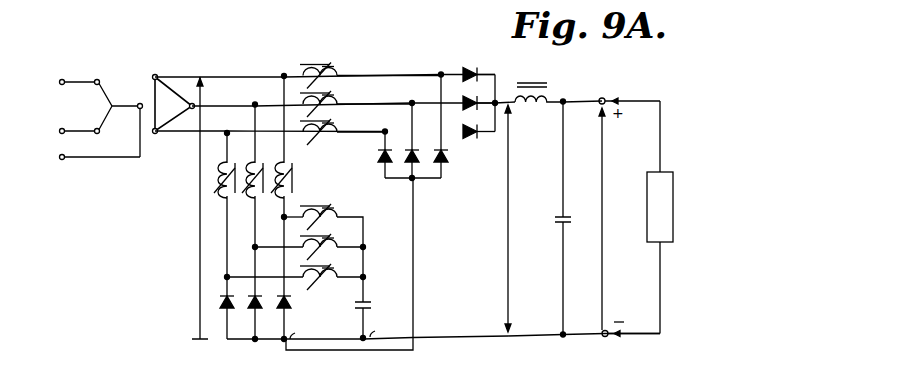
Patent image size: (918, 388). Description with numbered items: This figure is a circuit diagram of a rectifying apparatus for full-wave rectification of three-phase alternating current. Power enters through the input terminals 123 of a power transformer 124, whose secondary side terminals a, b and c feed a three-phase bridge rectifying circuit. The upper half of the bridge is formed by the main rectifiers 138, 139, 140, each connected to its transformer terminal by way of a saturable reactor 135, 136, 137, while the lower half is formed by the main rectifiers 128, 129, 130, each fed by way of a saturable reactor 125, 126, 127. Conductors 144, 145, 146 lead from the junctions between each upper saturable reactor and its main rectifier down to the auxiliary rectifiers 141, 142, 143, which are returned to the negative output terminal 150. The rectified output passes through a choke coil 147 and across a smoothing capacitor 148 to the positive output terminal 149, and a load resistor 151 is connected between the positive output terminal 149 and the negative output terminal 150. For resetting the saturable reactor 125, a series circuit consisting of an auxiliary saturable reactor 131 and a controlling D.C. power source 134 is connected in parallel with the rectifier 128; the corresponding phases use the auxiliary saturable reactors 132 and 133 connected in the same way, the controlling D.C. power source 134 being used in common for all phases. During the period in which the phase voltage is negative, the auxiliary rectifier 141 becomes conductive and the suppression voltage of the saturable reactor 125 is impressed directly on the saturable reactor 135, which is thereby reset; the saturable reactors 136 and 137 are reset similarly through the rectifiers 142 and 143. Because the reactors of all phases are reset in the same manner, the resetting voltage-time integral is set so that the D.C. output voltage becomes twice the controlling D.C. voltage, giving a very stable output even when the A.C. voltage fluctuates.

The input terminals 123 is at (79, 120).
The power transformer 124 is at (135, 88).
The saturable reactor 125 is at (290, 180).
The saturable reactor 126 is at (262, 168).
The saturable reactor 127 is at (231, 156).
The main rectifier 128 is at (291, 303).
The main rectifier 129 is at (250, 324).
The main rectifier 130 is at (222, 308).
The auxiliary saturable reactor 131 is at (337, 212).
The auxiliary saturable reactor 132 is at (337, 242).
The auxiliary saturable reactor 133 is at (337, 272).
The controlling D.C. power source 134 is at (368, 301).
The saturable reactor 135 is at (306, 62).
The saturable reactor 136 is at (334, 98).
The saturable reactor 137 is at (334, 126).
The main rectifier 138 is at (466, 66).
The main rectifier 139 is at (480, 100).
The main rectifier 140 is at (471, 136).
The auxiliary rectifier 141 is at (445, 160).
The rectifier 142 is at (419, 166).
The rectifier 143 is at (381, 157).
The junction 144 is at (440, 72).
The conductor 145 is at (409, 115).
The conductor 146 is at (394, 129).
The choke coil 147 is at (531, 82).
The smoothing capacitor 148 is at (557, 215).
The positive output terminal 149 is at (626, 90).
The negative output terminal 150 is at (628, 346).
The load resistor 151 is at (674, 194).